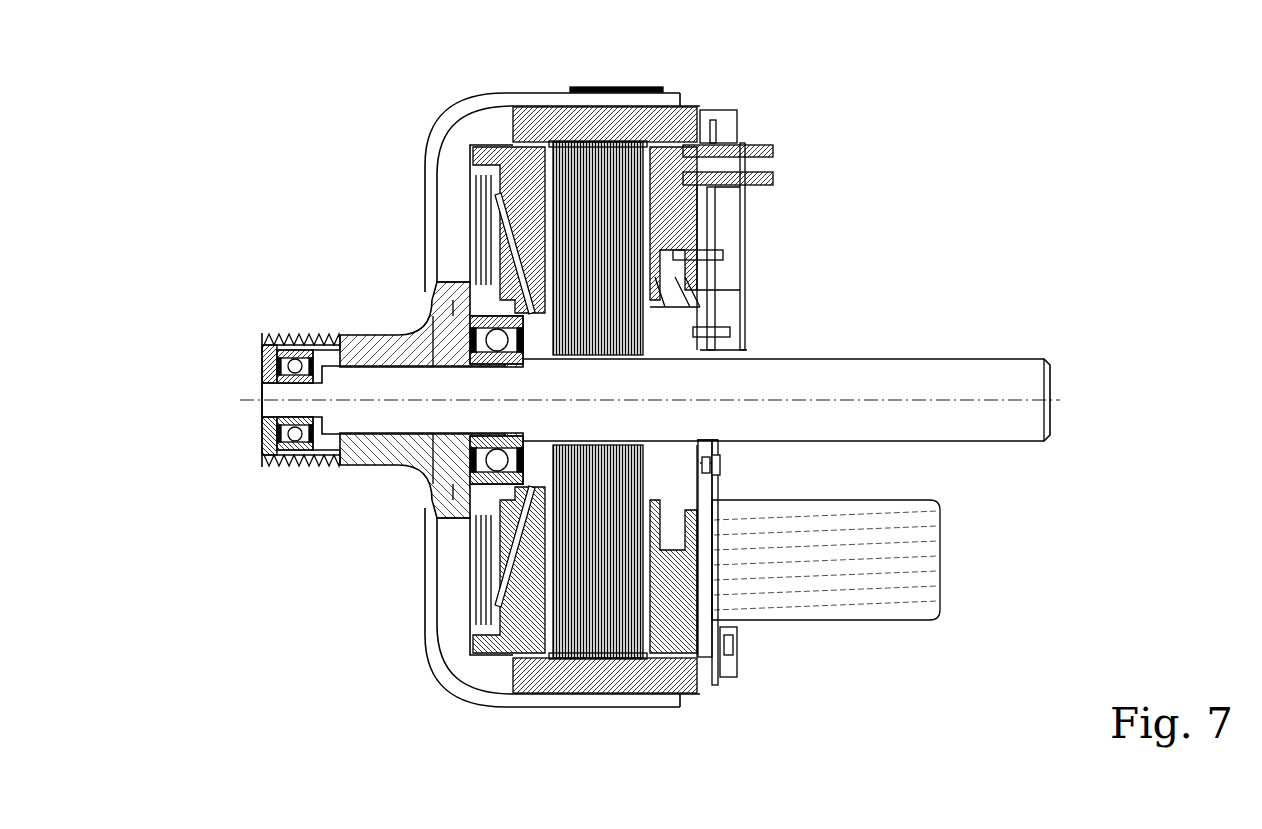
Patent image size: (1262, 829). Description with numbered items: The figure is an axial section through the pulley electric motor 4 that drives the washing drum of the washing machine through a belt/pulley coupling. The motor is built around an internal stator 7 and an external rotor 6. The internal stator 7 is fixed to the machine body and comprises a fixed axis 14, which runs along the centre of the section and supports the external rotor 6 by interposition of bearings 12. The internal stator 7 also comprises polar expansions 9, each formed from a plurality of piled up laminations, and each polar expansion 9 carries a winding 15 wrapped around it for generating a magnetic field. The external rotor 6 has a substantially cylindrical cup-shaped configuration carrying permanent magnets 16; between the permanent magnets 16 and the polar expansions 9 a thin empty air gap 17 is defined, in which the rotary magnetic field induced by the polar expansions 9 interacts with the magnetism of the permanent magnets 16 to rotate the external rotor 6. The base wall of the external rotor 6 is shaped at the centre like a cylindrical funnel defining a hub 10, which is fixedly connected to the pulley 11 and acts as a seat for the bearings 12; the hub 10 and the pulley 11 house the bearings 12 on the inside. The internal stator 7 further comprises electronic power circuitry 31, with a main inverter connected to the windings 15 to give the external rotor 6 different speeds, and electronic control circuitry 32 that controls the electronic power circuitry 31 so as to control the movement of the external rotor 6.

The pulley electric motor 4 is at (275, 143).
The external rotor 6 is at (435, 652).
The internal stator 7 is at (747, 350).
The polar expansions 9 is at (592, 200).
The hub 10 is at (385, 347).
The pulley 11 is at (308, 330).
The bearings 12 is at (490, 457).
The fixed axis 14 is at (912, 378).
The winding 15 is at (535, 185).
The permanent magnets 16 is at (610, 123).
The air gap 17 is at (565, 140).
The electronic power circuitry 31 is at (727, 463).
The electronic control circuitry 32 is at (727, 463).